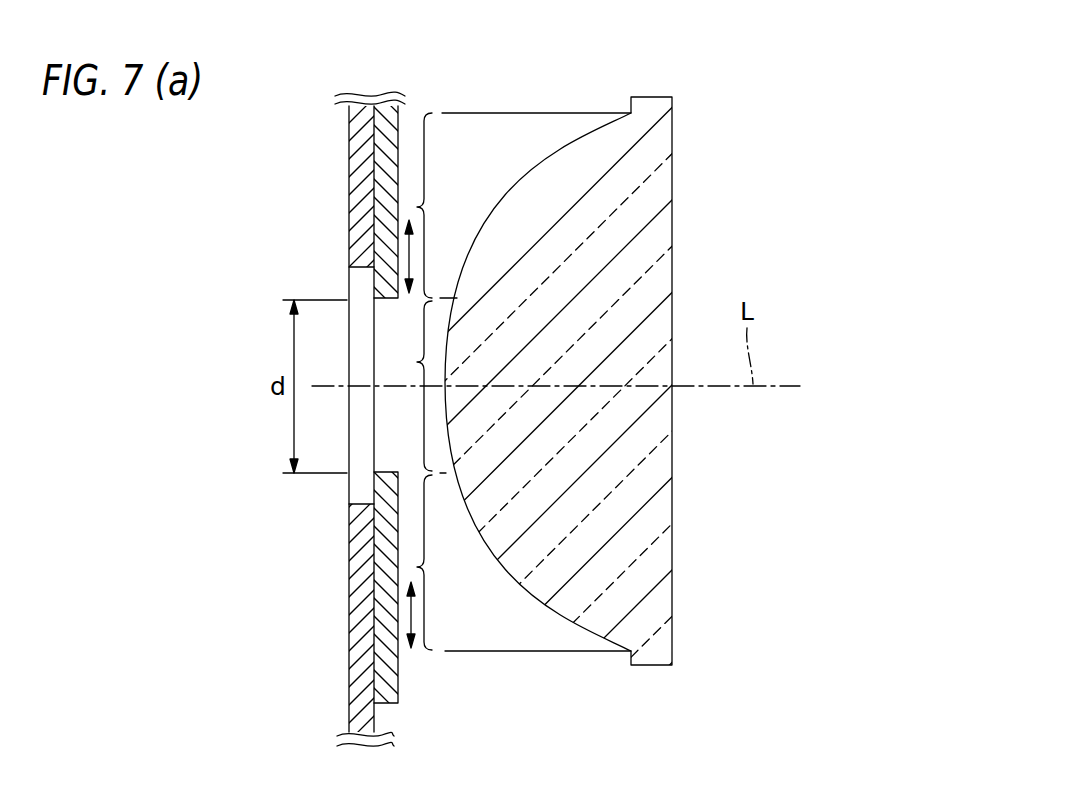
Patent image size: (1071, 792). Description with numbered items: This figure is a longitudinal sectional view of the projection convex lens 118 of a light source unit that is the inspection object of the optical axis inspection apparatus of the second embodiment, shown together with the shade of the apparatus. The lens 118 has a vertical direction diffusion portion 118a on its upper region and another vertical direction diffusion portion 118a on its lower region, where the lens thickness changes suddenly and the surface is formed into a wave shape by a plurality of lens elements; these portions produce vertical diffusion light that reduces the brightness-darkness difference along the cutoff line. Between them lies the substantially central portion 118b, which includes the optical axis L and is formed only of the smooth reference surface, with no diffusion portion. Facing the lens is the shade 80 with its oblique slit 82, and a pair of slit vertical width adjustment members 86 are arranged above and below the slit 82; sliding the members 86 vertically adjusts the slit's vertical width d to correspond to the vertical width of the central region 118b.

The shade 80 is at (349, 152).
The slit 82 is at (363, 503).
The slit vertical width adjustment member 86 is at (398, 152).
The projection convex lens 118 is at (657, 244).
The vertical direction diffusion portion 118a is at (423, 207).
The substantially central portion 118b is at (422, 362).